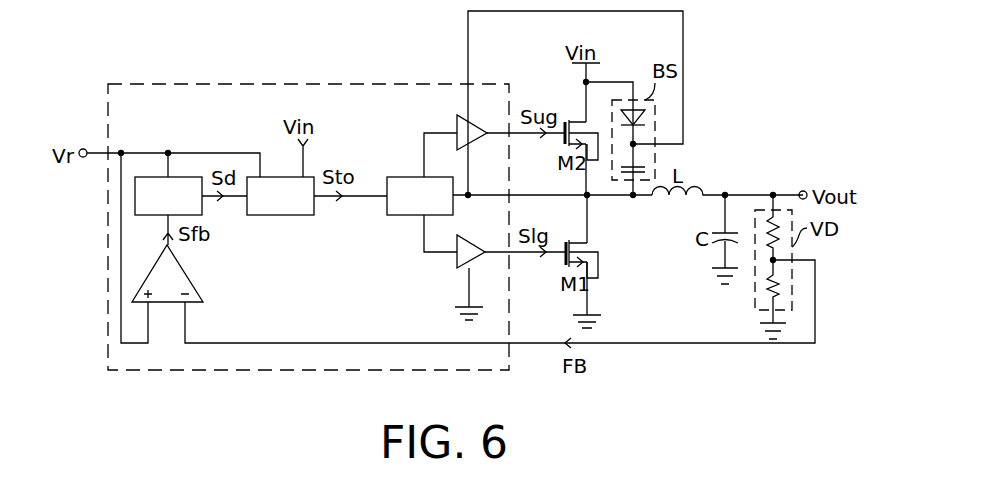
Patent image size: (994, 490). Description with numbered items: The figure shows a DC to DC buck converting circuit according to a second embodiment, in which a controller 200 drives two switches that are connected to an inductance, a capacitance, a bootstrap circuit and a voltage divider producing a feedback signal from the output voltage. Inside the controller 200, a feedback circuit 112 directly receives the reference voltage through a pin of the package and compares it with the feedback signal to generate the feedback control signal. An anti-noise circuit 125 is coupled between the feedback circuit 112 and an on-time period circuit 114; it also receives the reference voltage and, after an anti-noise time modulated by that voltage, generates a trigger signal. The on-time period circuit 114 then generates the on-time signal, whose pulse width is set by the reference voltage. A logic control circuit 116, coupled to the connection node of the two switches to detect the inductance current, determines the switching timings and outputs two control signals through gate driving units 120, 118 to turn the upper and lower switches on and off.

The controller 200 is at (108, 127).
The anti-noise circuit 125 is at (151, 209).
The on-time period circuit 114 is at (263, 209).
The logic control circuit 116 is at (403, 209).
The gate driving unit 120 is at (453, 118).
The gate driving unit 118 is at (458, 262).
The feedback circuit 112 is at (184, 279).